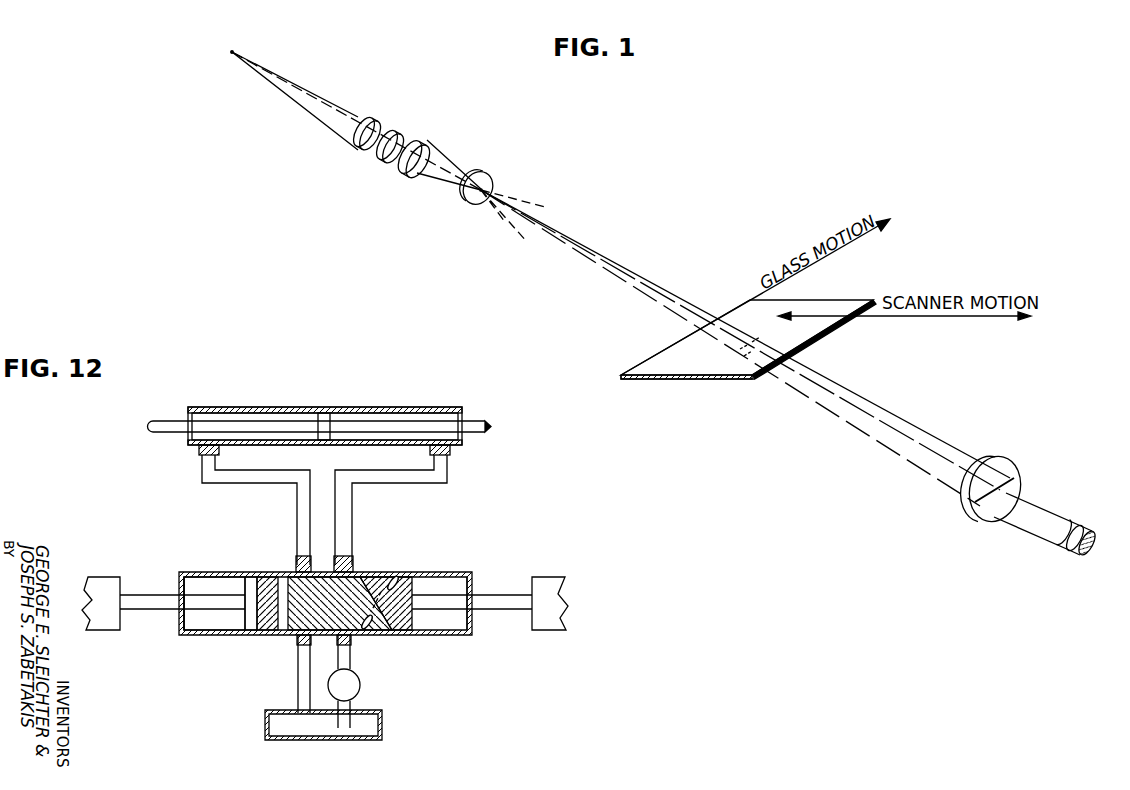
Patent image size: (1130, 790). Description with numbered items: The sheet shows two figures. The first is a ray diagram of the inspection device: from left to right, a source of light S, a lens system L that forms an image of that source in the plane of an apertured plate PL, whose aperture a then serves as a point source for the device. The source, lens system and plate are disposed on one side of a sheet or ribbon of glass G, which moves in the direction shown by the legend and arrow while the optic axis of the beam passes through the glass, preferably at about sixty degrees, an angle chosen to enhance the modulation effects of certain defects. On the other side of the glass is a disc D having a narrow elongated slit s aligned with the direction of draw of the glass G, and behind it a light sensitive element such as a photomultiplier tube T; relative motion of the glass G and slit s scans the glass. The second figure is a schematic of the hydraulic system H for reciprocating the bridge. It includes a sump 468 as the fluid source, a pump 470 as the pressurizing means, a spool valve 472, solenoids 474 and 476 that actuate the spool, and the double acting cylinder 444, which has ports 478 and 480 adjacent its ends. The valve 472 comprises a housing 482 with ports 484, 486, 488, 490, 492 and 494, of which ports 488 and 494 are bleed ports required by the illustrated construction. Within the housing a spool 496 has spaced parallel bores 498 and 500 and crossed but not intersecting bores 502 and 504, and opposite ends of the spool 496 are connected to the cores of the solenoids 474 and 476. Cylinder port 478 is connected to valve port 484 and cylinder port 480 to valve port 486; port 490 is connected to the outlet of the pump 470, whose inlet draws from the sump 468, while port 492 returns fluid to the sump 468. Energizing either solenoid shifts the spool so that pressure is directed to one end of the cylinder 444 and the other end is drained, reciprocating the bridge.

In FIG. 1, the source of light S is at (232, 52).
In FIG. 1, the lens system L is at (435, 134).
In FIG. 1, the apertured plate PL is at (467, 200).
In FIG. 1, the aperture a is at (489, 189).
In FIG. 1, the glass G is at (697, 374).
In FIG. 1, the disc D is at (1005, 462).
In FIG. 1, the slit s is at (1012, 480).
In FIG. 1, the photomultiplier tube T is at (1040, 495).
In FIG. 12, the hydraulic system H is at (453, 534).
In FIG. 12, the double acting cylinder 444 is at (422, 407).
In FIG. 12, the port 478 is at (190, 442).
In FIG. 12, the port 480 is at (465, 440).
In FIG. 12, the port 484 is at (301, 553).
In FIG. 12, the port 486 is at (344, 555).
In FIG. 12, the spool valve 472 is at (190, 569).
In FIG. 12, the solenoid 474 is at (102, 577).
In FIG. 12, the solenoid 476 is at (558, 577).
In FIG. 12, the bore 498 is at (251, 576).
In FIG. 12, the bore 500 is at (284, 576).
In FIG. 12, the bleed port 494 is at (186, 635).
In FIG. 12, the housing 482 is at (180, 625).
In FIG. 12, the bleed port 488 is at (470, 636).
In FIG. 12, the spool 496 is at (302, 623).
In FIG. 12, the bore 504 is at (364, 581).
In FIG. 12, the bore 502 is at (365, 632).
In FIG. 12, the port 492 is at (298, 645).
In FIG. 12, the port 490 is at (347, 650).
In FIG. 12, the pump 470 is at (359, 688).
In FIG. 12, the sump 468 is at (272, 722).